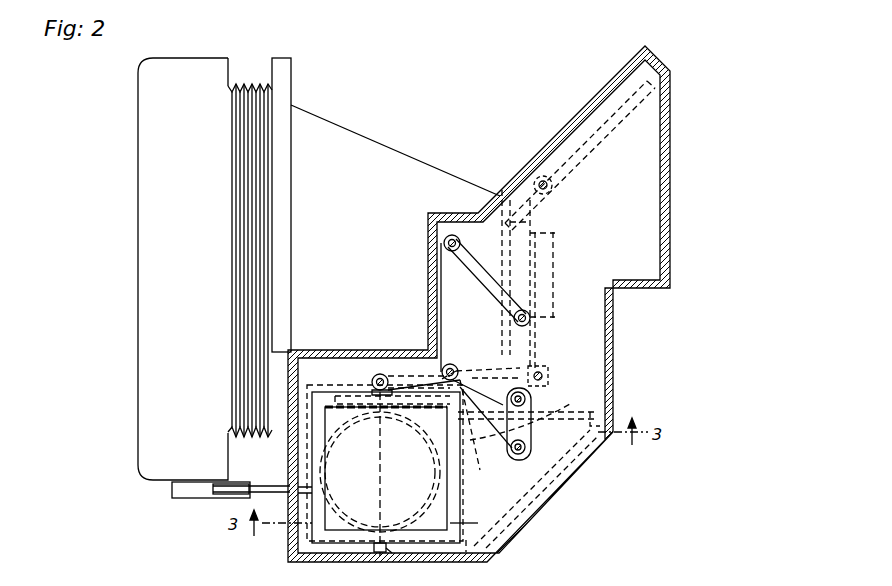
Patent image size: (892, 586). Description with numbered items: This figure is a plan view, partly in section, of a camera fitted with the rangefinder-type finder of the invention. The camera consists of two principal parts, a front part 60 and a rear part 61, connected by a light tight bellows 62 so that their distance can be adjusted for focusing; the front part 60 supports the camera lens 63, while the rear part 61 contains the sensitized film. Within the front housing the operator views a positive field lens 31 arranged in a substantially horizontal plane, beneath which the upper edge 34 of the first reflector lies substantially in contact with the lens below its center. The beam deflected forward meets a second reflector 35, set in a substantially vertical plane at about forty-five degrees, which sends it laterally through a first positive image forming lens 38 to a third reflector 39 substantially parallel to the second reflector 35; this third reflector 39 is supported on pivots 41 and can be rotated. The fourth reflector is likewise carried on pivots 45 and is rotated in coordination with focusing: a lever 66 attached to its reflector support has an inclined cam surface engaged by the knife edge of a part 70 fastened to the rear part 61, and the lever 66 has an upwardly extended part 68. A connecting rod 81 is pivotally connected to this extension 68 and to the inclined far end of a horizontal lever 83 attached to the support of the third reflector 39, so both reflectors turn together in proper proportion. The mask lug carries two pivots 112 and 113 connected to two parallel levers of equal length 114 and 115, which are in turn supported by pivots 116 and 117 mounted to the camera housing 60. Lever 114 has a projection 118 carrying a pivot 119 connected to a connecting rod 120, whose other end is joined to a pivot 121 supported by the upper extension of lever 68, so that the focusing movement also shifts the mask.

The field lens 31 is at (306, 556).
The upper edge of first reflector 34 is at (382, 476).
The second reflector 35 is at (506, 510).
The first positive image forming lens 38 is at (565, 422).
The third reflector 39 is at (600, 132).
The pivots 41 is at (552, 188).
The pivots 45 is at (398, 560).
The front part 60 is at (515, 528).
The rear part 61 is at (138, 346).
The light tight bellows 62 is at (250, 80).
The camera lens 63 is at (556, 300).
The lever 66 is at (264, 486).
The upwardly extended part of lever 68 is at (372, 380).
The part fastened to rear part 70 is at (172, 490).
The connecting rod 81 is at (518, 372).
The horizontal lever 83 is at (549, 354).
The pivot 112 is at (456, 366).
The pivot 113 is at (459, 243).
The parallel lever 114 is at (478, 428).
The parallel lever 115 is at (492, 287).
The pivot 116 is at (512, 455).
The pivot 117 is at (531, 318).
The projection 118 is at (533, 416).
The pivot 119 is at (526, 398).
The connecting rod 120 is at (418, 356).
The pivot 121 is at (378, 356).